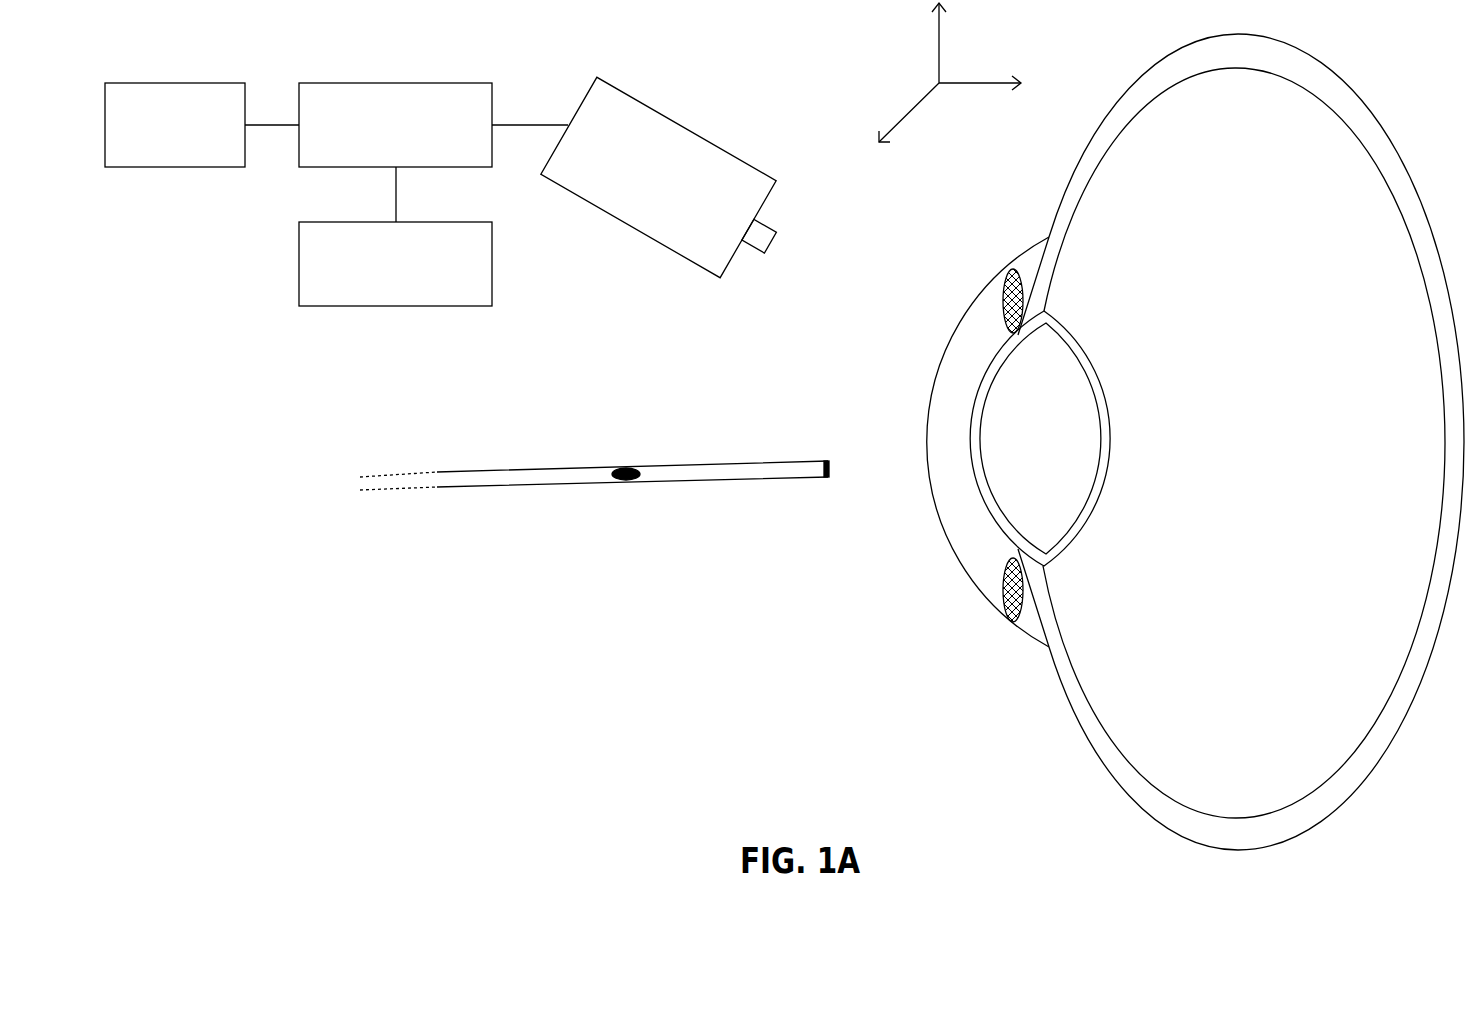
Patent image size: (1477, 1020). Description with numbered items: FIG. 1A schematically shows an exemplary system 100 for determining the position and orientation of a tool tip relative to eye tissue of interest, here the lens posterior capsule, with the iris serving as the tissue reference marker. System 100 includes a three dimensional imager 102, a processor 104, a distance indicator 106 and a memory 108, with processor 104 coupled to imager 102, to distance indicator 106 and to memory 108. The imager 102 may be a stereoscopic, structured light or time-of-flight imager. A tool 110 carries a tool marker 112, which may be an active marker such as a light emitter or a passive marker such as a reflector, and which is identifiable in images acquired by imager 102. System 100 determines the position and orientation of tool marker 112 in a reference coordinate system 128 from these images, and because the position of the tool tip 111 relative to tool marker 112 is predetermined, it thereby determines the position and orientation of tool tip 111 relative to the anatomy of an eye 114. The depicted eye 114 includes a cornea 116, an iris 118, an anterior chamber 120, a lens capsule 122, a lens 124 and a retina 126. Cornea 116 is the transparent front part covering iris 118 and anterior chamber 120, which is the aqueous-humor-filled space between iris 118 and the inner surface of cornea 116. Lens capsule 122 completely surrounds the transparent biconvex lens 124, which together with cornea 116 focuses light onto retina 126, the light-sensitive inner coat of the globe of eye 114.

The system 100 is at (612, 675).
The 3D imager 102 is at (577, 107).
The processor 104 is at (367, 82).
The distance indicator 106 is at (299, 291).
The memory 108 is at (188, 167).
The tool 110 is at (535, 488).
The tool tip 111 is at (828, 455).
The tool marker 112 is at (627, 463).
The eye 114 is at (1177, 442).
The cornea 116 is at (934, 387).
The iris 118 is at (1004, 570).
The anterior chamber 120 is at (975, 340).
The lens capsule 122 is at (1102, 388).
The lens 124 is at (1065, 477).
The retina 126 is at (1444, 391).
The reference coordinate system 128 is at (941, 42).